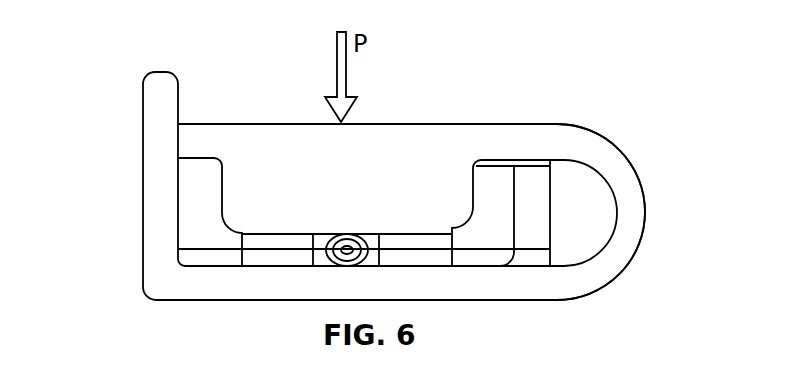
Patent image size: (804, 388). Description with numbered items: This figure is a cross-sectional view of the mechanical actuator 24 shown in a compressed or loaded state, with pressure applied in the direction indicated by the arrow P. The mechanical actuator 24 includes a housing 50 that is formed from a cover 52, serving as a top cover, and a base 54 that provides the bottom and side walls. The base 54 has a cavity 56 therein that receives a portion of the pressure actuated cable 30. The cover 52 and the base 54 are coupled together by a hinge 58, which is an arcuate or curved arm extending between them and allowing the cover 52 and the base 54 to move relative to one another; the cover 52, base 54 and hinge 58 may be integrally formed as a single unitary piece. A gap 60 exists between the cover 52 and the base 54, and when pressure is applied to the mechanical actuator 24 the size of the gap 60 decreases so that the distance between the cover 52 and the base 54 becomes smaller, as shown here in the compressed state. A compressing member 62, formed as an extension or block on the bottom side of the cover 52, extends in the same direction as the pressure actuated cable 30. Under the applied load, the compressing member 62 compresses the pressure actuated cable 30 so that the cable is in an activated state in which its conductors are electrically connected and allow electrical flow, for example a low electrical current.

The mechanical actuator 24 is at (100, 328).
The pressure actuated cable 30 is at (323, 232).
The housing 50 is at (643, 134).
The cover 52 is at (464, 124).
The base 54 is at (542, 301).
The cavity 56 is at (421, 249).
The hinge 58 is at (638, 215).
The gap 60 is at (187, 162).
The compressing member 62 is at (458, 202).